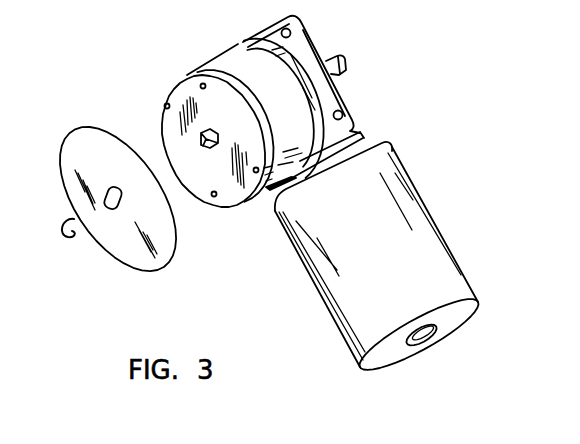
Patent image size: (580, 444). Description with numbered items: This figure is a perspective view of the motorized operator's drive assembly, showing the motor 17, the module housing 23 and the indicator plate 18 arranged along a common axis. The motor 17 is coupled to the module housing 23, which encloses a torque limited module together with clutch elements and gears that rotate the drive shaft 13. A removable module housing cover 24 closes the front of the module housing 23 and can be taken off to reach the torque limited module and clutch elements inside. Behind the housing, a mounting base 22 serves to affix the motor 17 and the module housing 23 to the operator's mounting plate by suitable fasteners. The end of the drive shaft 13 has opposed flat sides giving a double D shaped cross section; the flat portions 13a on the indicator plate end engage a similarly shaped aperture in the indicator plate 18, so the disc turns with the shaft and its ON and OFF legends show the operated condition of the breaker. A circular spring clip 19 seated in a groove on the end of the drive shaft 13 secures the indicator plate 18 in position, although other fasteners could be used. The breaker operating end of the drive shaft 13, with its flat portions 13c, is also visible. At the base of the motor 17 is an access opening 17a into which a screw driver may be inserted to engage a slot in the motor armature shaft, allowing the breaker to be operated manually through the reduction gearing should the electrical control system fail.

The drive shaft 13 is at (201, 141).
The flat portions 13a is at (214, 148).
The flat portions 13c is at (346, 68).
The motor 17 is at (458, 257).
The access opening 17a is at (425, 335).
The indicator plate 18 is at (166, 264).
The circular spring clip 19 is at (72, 238).
The mounting base 22 is at (300, 34).
The module housing 23 is at (220, 55).
The module housing cover 24 is at (189, 75).